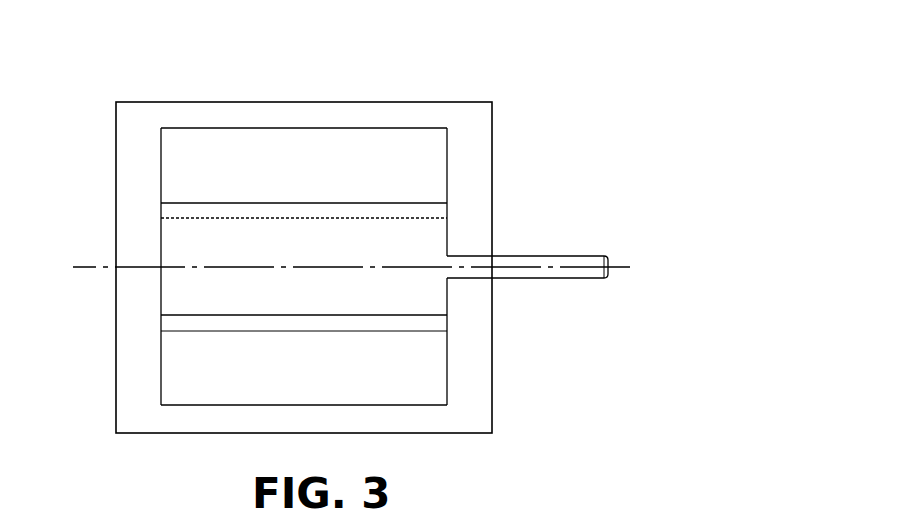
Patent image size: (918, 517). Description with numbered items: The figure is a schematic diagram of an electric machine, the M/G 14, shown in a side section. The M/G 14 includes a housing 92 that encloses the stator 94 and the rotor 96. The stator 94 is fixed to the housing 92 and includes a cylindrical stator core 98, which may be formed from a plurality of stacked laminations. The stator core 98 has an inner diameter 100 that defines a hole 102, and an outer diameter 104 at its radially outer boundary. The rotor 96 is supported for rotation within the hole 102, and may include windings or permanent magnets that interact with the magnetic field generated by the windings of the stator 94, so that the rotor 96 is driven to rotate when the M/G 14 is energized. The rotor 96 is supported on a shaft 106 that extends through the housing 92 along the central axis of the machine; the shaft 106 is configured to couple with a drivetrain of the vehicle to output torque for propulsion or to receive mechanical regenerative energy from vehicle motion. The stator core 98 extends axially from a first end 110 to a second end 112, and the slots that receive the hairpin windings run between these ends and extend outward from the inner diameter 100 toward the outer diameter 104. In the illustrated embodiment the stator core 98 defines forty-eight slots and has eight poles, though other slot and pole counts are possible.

The M/G 14 is at (484, 50).
The housing 92 is at (304, 102).
The stator 94 is at (212, 128).
The rotor 96 is at (161, 244).
The stator core 98 is at (447, 165).
The inner diameter 100 is at (425, 203).
The hole 102 is at (458, 320).
The outer diameter 104 is at (218, 405).
The shaft 106 is at (535, 255).
The first end 110 is at (161, 169).
The second end 112 is at (447, 366).